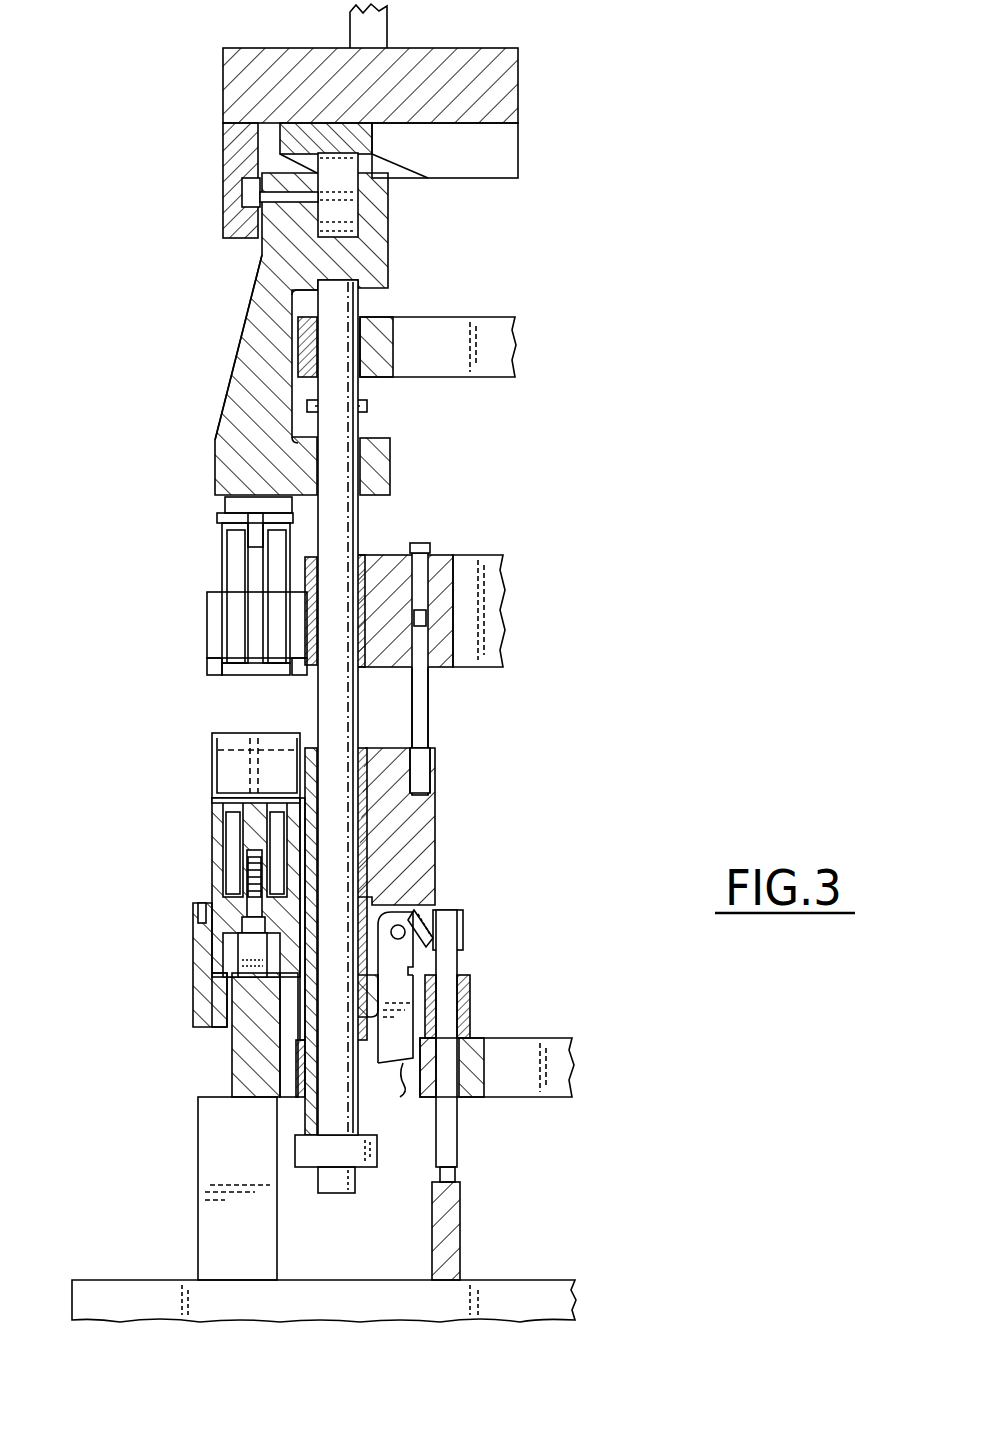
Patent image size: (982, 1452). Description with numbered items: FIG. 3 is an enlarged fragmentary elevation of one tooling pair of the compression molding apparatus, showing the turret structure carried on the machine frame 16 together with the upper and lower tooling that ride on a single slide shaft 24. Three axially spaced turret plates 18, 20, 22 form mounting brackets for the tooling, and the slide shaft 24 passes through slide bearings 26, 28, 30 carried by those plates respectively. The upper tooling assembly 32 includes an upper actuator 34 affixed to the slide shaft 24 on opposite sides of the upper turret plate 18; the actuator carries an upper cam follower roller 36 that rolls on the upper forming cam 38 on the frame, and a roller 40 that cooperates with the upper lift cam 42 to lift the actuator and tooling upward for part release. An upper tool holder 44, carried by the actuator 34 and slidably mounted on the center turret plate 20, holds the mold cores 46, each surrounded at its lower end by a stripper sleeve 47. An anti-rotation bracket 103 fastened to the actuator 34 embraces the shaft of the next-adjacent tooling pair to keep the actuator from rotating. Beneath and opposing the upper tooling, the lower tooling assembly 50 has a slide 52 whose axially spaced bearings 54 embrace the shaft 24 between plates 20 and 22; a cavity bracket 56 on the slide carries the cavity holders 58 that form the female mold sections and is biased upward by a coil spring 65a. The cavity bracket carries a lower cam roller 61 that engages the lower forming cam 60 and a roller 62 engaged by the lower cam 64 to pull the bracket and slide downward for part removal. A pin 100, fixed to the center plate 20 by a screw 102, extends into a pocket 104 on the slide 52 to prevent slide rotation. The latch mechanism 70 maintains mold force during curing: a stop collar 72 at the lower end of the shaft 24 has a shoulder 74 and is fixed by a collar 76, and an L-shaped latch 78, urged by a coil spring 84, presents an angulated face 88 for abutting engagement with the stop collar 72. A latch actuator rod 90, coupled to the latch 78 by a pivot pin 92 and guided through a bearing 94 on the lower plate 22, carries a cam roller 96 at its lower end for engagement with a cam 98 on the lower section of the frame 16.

The machine frame 16 is at (372, 35).
The upper turret plate 18 is at (487, 327).
The center turret plate 20 is at (485, 562).
The lower turret plate 22 is at (550, 1045).
The slide shaft 24 is at (340, 292).
The slide bearing 26 is at (380, 332).
The slide bearing 28 is at (385, 555).
The slide bearing 30 is at (300, 1080).
The upper tooling assembly 32 is at (210, 440).
The upper actuator 34 is at (245, 352).
The upper cam follower roller 36 is at (348, 212).
The upper forming cam 38 is at (380, 143).
The roller 40 is at (242, 187).
The upper lift cam 42 is at (233, 142).
The upper tool holder 44 is at (208, 603).
The mold cores 46 is at (275, 545).
The stripper sleeve 47 is at (220, 675).
The lower tooling assembly 50 is at (206, 838).
The slide 52 is at (425, 905).
The bearings 54 is at (392, 745).
The cavity bracket 56 is at (215, 802).
The cavity holders 58 is at (215, 773).
The lower forming cam 60 is at (232, 1050).
The lower cam roller 61 is at (238, 960).
The roller 62 is at (205, 915).
The lower cam 64 is at (205, 998).
The coil spring 65a is at (228, 867).
The latch mechanism 70 is at (478, 1059).
The stop collar 72 is at (300, 1108).
The shoulder 74 is at (300, 1000).
The collar 76 is at (318, 1157).
The latch 78 is at (405, 1025).
The coil spring 84 is at (432, 920).
The face 88 is at (403, 1099).
The latch actuator rod 90 is at (455, 1135).
The pivot pin 92 is at (460, 930).
The bearing 94 is at (470, 985).
The cam roller 96 is at (455, 1168).
The cam 98 is at (465, 1240).
The pin 100 is at (430, 682).
The screw 102 is at (430, 556).
The anti-rotation bracket 103 is at (370, 405).
The pocket 104 is at (433, 785).